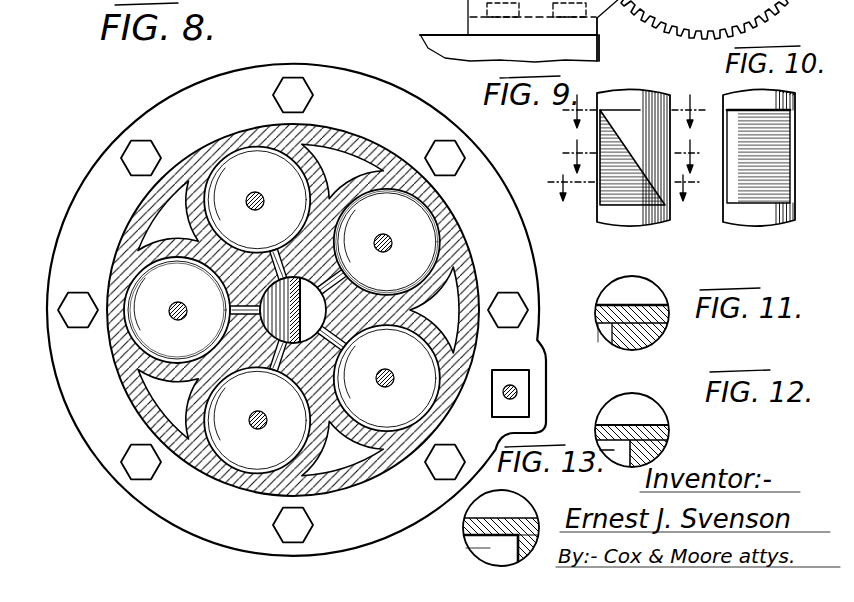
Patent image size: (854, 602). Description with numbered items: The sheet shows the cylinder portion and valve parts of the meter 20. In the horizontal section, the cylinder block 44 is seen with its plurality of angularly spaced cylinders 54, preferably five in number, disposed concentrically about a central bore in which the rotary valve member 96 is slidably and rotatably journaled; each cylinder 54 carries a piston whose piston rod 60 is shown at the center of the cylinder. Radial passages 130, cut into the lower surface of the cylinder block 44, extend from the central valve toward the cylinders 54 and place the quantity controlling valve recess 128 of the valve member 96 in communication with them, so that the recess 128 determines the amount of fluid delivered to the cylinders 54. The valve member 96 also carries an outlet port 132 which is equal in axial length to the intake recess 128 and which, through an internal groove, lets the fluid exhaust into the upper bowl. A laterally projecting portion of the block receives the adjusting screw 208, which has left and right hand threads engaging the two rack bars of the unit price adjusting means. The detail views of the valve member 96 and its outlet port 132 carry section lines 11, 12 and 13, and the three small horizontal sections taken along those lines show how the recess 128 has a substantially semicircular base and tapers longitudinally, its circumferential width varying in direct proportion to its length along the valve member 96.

In FIG. 8, the meter 20 is at (107, 139).
In FIG. 8, the cylinder block 44 is at (352, 143).
In FIG. 8, the cylinders 54 is at (238, 165).
In FIG. 8, the piston rod 60 is at (258, 201).
In FIG. 8, the rotary valve member 96 is at (322, 252).
In FIG. 9, the rotary valve member 96 is at (650, 223).
In FIG. 11, the rotary valve member 96 is at (665, 346).
In FIG. 12, the rotary valve member 96 is at (668, 447).
In FIG. 13, the rotary valve member 96 is at (547, 518).
In FIG. 8, the quantity controlling valve recess 128 is at (225, 335).
In FIG. 9, the quantity controlling valve recess 128 is at (612, 198).
In FIG. 11, the quantity controlling valve recess 128 is at (600, 336).
In FIG. 12, the quantity controlling valve recess 128 is at (600, 450).
In FIG. 13, the quantity controlling valve recess 128 is at (487, 540).
In FIG. 8, the radial passages 130 is at (323, 368).
In FIG. 8, the outlet port 132 is at (312, 311).
In FIG. 10, the outlet port 132 is at (770, 197).
In FIG. 11, the outlet port 132 is at (640, 291).
In FIG. 12, the outlet port 132 is at (652, 405).
In FIG. 8, the adjusting screw 208 is at (517, 388).
In FIG. 9, the section line 11- 11 is at (634, 100).
In FIG. 9, the section line 12- 12 is at (631, 156).
In FIG. 9, the section line 13- 13 is at (626, 188).